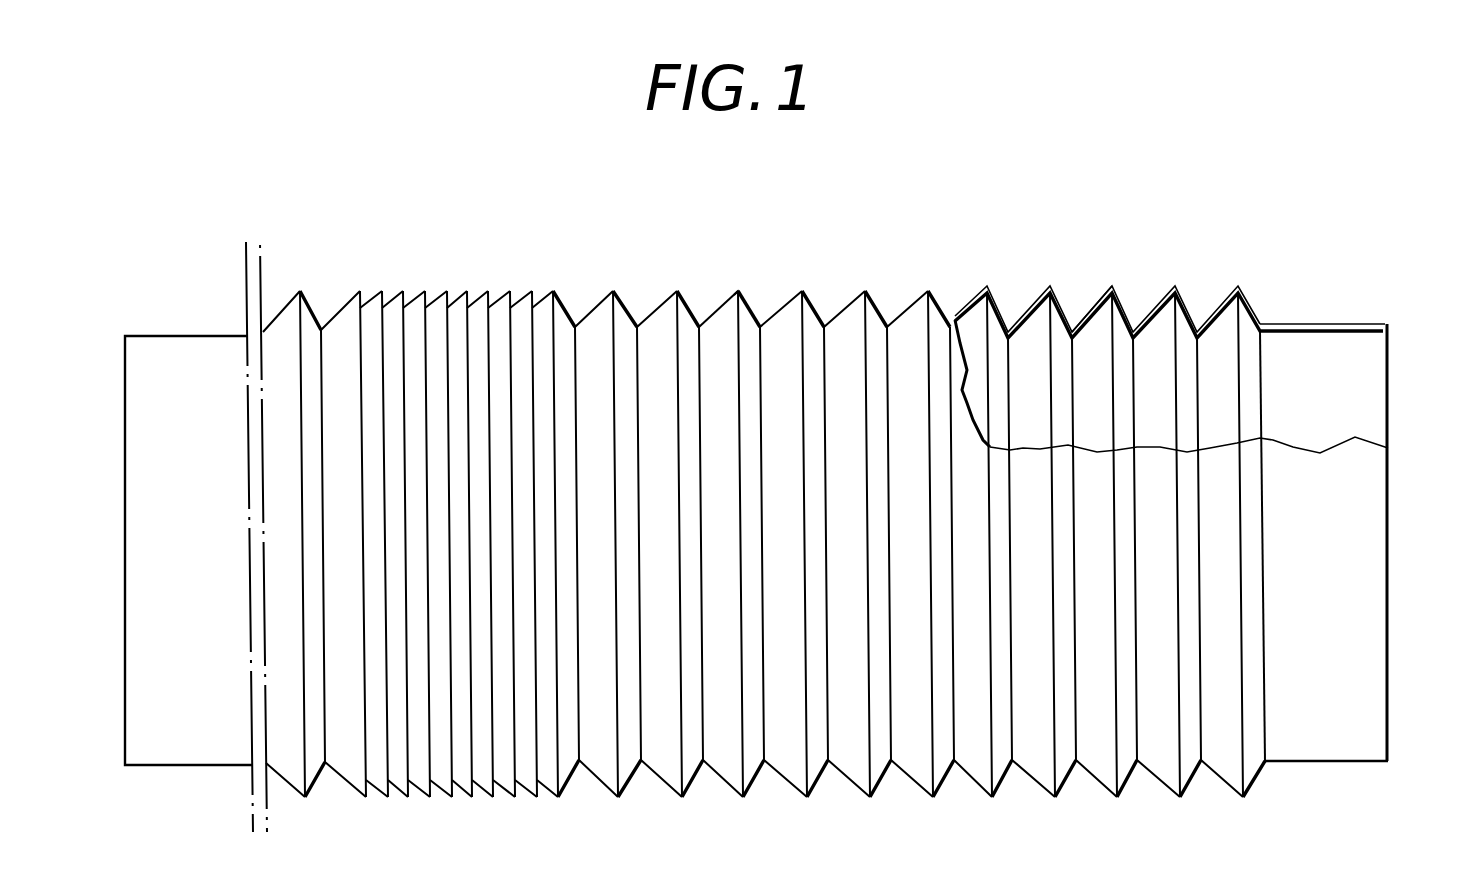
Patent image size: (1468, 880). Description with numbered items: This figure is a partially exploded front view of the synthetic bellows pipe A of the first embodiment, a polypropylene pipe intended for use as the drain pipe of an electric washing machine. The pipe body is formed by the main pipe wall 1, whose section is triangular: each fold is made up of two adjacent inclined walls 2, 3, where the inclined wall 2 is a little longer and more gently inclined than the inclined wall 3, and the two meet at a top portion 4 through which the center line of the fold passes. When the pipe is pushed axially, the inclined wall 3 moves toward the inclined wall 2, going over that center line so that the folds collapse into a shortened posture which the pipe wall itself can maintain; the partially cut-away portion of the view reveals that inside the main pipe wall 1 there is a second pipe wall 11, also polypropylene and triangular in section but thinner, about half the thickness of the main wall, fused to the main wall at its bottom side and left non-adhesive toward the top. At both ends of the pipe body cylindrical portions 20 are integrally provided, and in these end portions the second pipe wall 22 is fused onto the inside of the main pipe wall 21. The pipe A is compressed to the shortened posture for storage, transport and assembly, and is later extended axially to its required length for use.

The main pipe wall 1 is at (895, 475).
The inclined wall 2 is at (722, 298).
The inclined wall 3 is at (763, 267).
The top portion 4 is at (738, 286).
The second pipe wall 11 is at (1163, 330).
The cylindrical portions 20 is at (178, 358).
The main pipe wall 21 is at (1350, 320).
The second pipe wall 22 is at (1360, 333).
The drain pipe A is at (593, 278).